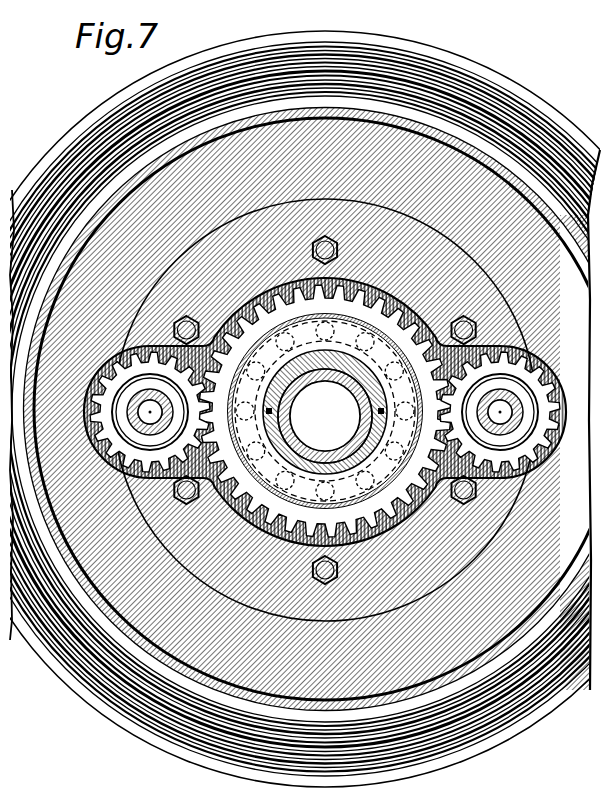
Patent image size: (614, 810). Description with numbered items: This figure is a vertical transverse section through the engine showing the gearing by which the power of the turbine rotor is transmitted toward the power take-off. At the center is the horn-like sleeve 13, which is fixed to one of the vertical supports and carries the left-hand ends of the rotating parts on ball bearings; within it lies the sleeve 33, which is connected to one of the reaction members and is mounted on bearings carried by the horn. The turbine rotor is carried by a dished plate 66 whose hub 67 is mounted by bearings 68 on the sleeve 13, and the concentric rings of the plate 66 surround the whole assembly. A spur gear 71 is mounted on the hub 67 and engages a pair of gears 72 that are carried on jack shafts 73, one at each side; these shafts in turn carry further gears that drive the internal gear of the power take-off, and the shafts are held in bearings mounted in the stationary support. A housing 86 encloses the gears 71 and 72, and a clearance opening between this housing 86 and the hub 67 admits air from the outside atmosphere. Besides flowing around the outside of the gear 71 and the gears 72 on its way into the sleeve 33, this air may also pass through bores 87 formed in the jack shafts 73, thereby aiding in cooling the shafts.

The horn-like sleeve 13 is at (300, 459).
The sleeve 33 is at (308, 455).
The dished plate 66 is at (451, 153).
The hub 67 is at (471, 249).
The bearings 68 is at (371, 331).
The spur gear 71 is at (290, 287).
The gears 72 is at (106, 368).
The jack shafts 73 is at (124, 456).
The housing 86 is at (247, 313).
The bores 87 is at (144, 404).